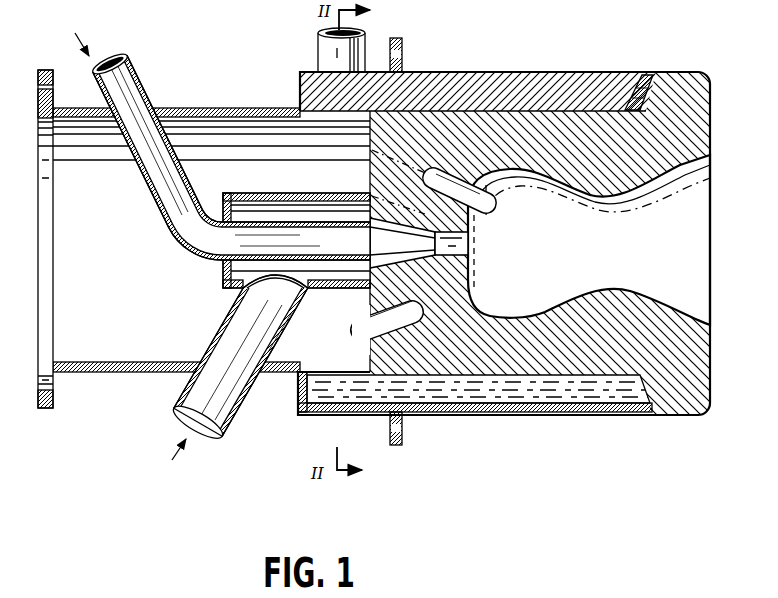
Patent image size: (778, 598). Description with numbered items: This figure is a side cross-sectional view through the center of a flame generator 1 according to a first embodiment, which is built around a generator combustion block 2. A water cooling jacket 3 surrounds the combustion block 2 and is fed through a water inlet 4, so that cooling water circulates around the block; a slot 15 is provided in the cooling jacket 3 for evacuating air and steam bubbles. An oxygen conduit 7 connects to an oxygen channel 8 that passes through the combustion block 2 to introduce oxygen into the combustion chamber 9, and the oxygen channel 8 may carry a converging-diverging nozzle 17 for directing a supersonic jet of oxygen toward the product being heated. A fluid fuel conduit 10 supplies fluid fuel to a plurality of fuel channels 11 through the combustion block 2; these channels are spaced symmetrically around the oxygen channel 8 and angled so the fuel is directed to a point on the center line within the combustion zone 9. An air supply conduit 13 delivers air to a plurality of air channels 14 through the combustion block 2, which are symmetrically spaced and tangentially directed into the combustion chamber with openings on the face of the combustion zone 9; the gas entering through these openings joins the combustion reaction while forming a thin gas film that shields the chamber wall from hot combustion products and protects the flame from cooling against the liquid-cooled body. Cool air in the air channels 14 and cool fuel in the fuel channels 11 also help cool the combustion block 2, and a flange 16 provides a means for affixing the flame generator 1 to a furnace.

The flame generator 1 is at (614, 432).
The generator combustion block 2 is at (682, 75).
The water cooling jacket 3 is at (536, 403).
The water inlet 4 is at (318, 37).
The oxygen conduit 7 is at (133, 101).
The oxygen channel 8 is at (371, 253).
The combustion chamber 9 is at (545, 252).
The fluid fuel conduit 10 is at (252, 378).
The fuel channels 11 is at (370, 192).
The air supply conduit 13 is at (100, 373).
The air channels 14 is at (451, 178).
The slot 15 is at (643, 80).
The flange 16 is at (402, 430).
The converging-diverging nozzle 17 is at (480, 219).